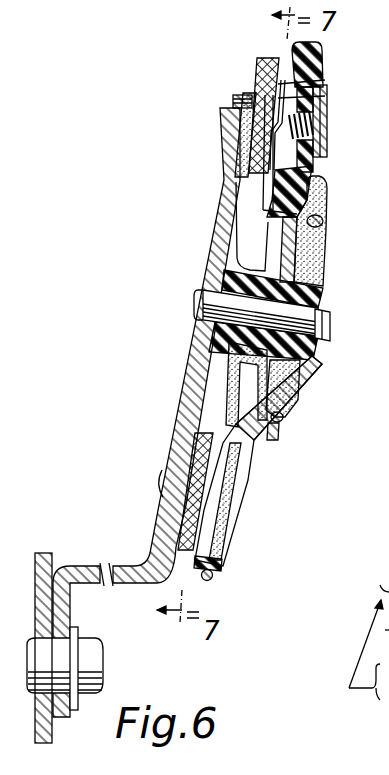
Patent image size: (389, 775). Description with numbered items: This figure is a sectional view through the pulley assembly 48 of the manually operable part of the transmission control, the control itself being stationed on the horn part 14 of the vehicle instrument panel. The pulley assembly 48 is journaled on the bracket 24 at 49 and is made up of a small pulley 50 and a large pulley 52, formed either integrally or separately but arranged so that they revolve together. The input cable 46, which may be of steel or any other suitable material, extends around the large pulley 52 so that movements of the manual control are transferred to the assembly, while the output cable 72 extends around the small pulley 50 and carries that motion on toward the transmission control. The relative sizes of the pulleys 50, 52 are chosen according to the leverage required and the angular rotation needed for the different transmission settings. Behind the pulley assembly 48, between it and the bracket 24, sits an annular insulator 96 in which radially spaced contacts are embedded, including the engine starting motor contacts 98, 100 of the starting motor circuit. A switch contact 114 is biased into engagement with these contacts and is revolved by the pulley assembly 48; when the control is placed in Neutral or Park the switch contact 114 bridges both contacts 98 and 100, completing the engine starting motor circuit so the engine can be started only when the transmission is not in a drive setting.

The horn part 14 is at (57, 562).
The bracket 24 is at (205, 257).
The cable 46 is at (308, 42).
The pulley assembly 48 is at (247, 477).
The journal 49 is at (232, 303).
The small pulley 50 is at (313, 223).
The large pulley 52 is at (223, 577).
The cable 72 is at (283, 425).
The annular insulator 96 is at (257, 77).
The engine starting motor contact 98 is at (270, 87).
The engine starting motor contact 100 is at (257, 157).
The switch contact 114 is at (325, 92).